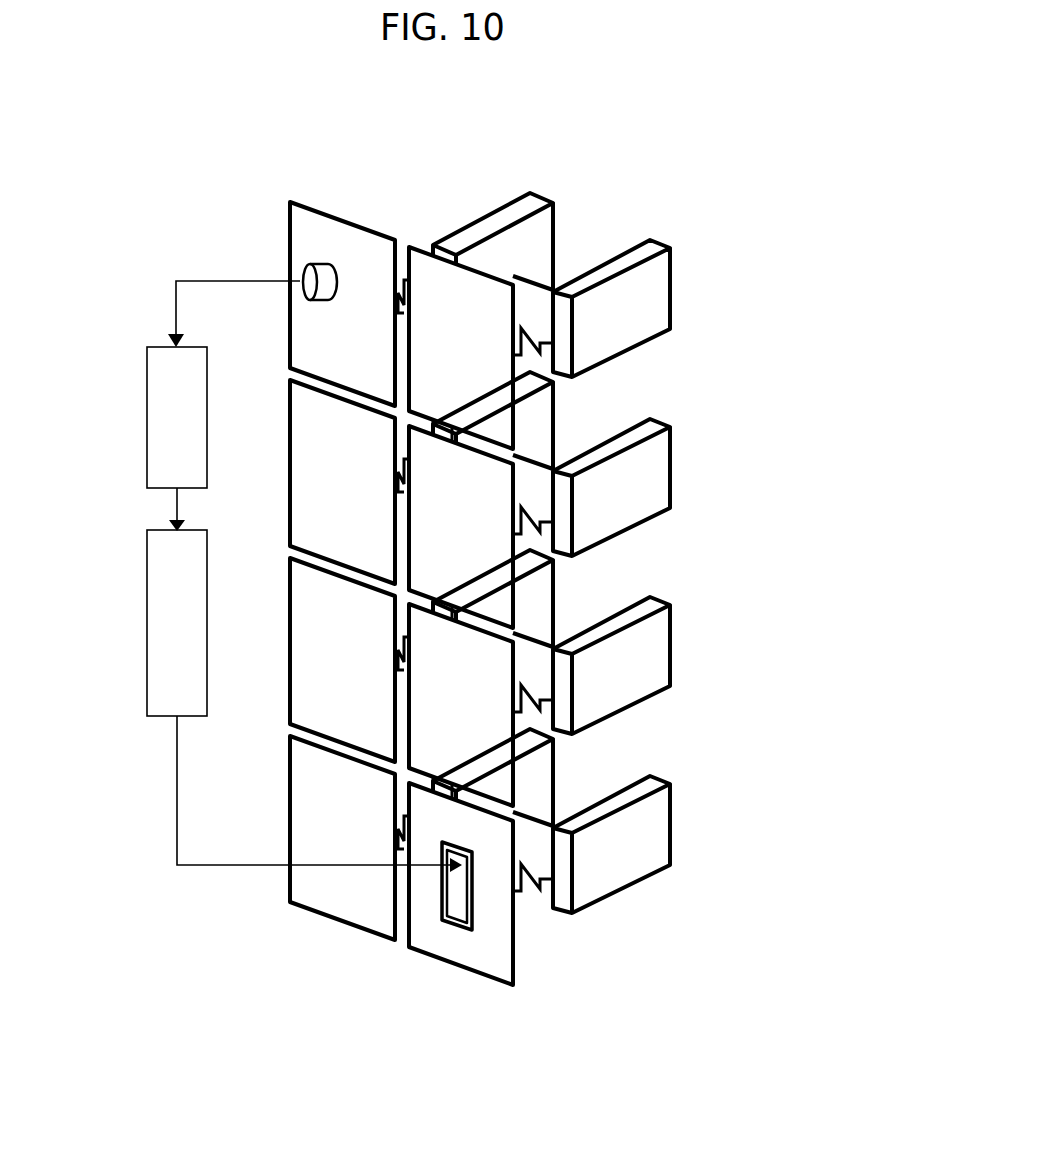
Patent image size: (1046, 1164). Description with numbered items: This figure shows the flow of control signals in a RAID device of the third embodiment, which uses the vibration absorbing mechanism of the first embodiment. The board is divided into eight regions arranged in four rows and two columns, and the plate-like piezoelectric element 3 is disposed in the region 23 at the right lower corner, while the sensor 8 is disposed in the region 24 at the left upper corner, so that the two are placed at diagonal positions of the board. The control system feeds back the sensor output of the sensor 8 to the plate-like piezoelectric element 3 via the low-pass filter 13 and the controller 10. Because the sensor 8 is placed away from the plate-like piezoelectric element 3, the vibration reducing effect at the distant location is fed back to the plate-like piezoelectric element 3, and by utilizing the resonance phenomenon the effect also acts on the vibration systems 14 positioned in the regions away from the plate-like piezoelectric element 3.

The plate-like piezoelectric element 3 is at (455, 910).
The sensor 8 is at (300, 281).
The controller 10 is at (147, 645).
The low-pass filter 13 is at (147, 423).
The vibration systems 14 is at (553, 210).
The region 23 is at (478, 948).
The region 24 is at (353, 243).